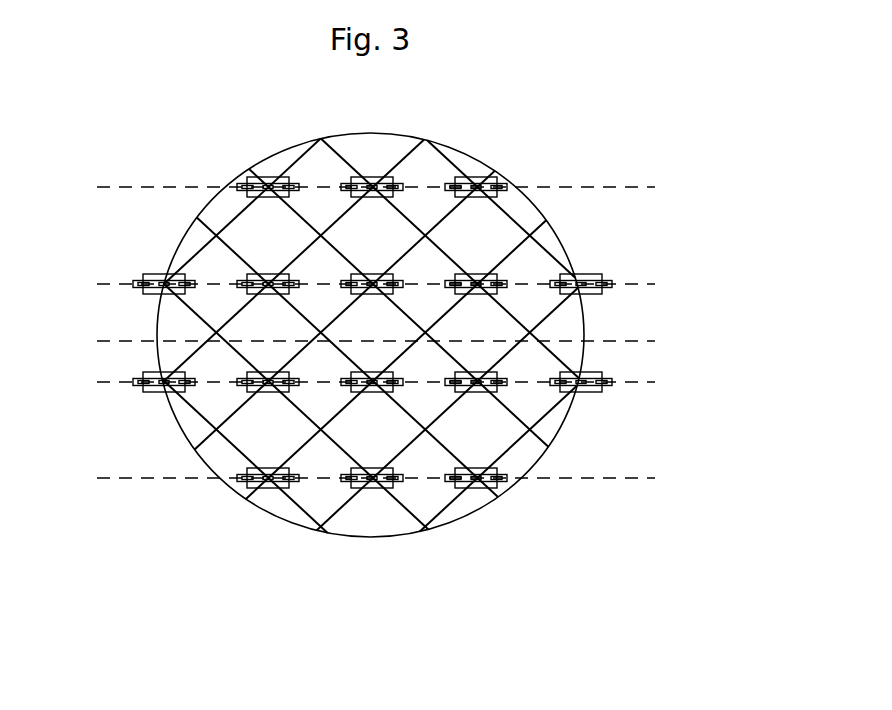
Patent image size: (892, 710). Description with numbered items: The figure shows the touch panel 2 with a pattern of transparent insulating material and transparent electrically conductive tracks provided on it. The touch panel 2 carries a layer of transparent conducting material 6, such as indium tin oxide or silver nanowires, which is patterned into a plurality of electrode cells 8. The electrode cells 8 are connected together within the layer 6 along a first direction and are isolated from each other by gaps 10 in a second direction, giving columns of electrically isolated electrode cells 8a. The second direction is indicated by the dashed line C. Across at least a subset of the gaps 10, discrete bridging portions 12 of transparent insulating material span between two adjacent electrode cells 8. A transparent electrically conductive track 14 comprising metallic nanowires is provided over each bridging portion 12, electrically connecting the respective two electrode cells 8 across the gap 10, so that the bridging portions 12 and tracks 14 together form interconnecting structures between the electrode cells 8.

The touch panel 2 is at (692, 196).
The layer of transparent conducting material 6 is at (160, 326).
The electrode cells 8 is at (562, 426).
The electrically isolated electrode cells 8a is at (527, 460).
The gaps 10 is at (487, 486).
The bridging portions 12 is at (268, 486).
The transparent electrically conductive tracks 14 is at (253, 482).
The dashed line indicating second direction C is at (619, 357).